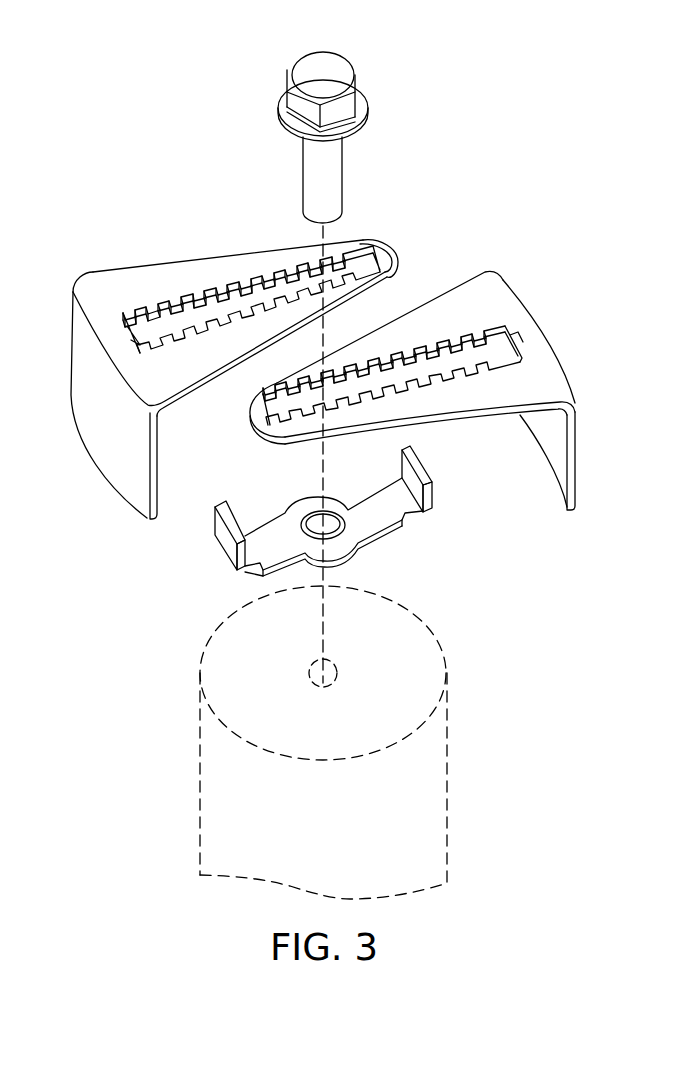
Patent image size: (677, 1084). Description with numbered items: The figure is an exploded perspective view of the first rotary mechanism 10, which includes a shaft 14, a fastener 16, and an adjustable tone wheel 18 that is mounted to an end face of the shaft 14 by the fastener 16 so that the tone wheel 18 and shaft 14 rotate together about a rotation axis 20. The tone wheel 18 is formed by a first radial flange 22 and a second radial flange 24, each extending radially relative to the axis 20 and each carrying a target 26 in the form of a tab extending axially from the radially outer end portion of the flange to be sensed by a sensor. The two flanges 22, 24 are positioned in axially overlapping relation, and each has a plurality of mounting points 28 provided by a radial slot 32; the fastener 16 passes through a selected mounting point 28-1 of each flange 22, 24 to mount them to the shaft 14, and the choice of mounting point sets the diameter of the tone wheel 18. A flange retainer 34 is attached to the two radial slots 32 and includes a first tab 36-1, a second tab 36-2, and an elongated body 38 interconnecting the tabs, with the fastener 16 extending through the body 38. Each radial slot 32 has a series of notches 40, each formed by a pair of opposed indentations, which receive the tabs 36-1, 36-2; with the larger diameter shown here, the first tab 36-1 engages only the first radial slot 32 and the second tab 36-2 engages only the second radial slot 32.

The first rotary mechanism 10 is at (528, 128).
The shaft 14 is at (447, 758).
The fastener 16 is at (330, 67).
The adjustable tone wheel 18 is at (162, 167).
The rotation axis 20 is at (328, 607).
The first radial flange 22 is at (135, 280).
The second radial flange 24 is at (470, 293).
The target 26 is at (135, 492).
The mounting points 28 is at (280, 272).
The selected mounting point 28-1 is at (332, 283).
The radial slot 32 is at (140, 338).
The flange retainer 34 is at (267, 500).
The first tab 36-1 is at (227, 540).
The second tab 36-2 is at (427, 495).
The elongated body 38 is at (382, 537).
The notches 40 is at (212, 292).